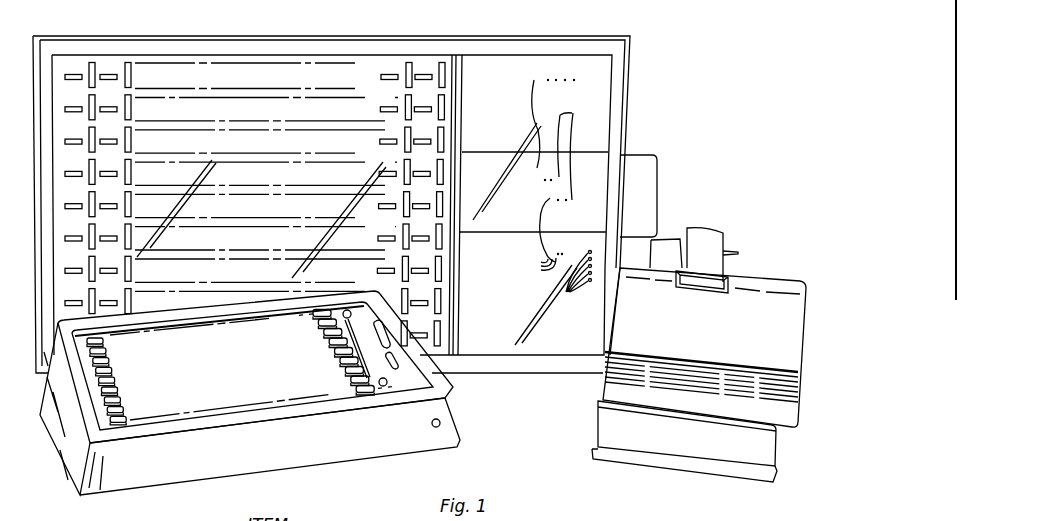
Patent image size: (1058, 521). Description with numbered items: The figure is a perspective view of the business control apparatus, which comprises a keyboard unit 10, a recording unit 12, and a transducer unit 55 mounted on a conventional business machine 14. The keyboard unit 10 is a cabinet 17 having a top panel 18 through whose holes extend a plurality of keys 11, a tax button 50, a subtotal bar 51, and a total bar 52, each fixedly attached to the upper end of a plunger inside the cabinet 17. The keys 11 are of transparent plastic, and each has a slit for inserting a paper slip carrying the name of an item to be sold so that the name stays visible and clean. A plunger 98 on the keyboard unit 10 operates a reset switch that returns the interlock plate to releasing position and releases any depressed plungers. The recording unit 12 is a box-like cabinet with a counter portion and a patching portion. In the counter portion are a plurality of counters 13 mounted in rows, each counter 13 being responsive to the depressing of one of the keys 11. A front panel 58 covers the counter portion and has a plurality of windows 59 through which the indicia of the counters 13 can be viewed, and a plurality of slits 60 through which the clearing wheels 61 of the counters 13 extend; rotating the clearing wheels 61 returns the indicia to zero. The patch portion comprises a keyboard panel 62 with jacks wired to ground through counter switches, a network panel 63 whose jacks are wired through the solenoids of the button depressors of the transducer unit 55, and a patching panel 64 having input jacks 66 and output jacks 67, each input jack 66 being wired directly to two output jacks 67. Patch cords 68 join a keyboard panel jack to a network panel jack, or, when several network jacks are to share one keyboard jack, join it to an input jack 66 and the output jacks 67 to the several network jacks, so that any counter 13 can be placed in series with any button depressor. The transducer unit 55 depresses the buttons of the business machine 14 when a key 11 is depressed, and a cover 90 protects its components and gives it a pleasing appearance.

The keyboard unit 10 is at (77, 496).
The keys 11 is at (112, 370).
The recording unit 12 is at (630, 48).
The counters 13 is at (381, 78).
The business machine 14 is at (600, 430).
The cabinet 17 is at (366, 450).
The top panel 18 is at (284, 408).
The tax button 50 is at (386, 389).
The subtotal bar 51 is at (396, 369).
The total bar 52 is at (380, 323).
The transducer unit 55 is at (603, 383).
The front panel 58 is at (101, 60).
The windows 59 is at (117, 141).
The slits 60 is at (131, 68).
The clearing wheels 61 is at (131, 99).
The keyboard panel 62 is at (606, 101).
The network panel 63 is at (598, 167).
The patching panel 64 is at (592, 292).
The input jacks 66 is at (538, 265).
The output jacks 67 is at (579, 281).
The patch cords 68 is at (560, 116).
The cover 90 is at (713, 402).
The plunger 98 is at (432, 427).